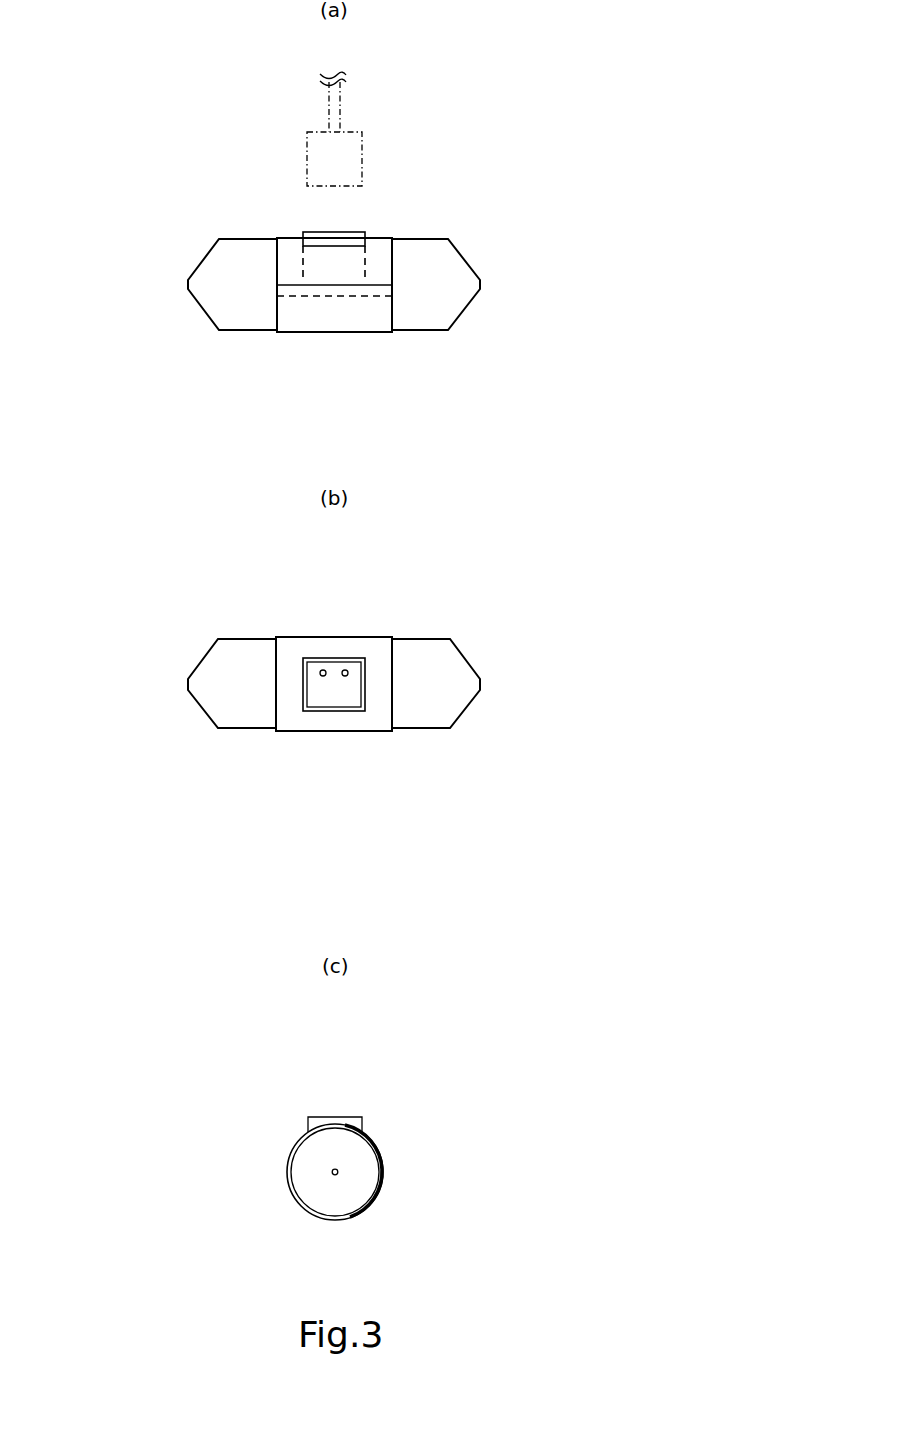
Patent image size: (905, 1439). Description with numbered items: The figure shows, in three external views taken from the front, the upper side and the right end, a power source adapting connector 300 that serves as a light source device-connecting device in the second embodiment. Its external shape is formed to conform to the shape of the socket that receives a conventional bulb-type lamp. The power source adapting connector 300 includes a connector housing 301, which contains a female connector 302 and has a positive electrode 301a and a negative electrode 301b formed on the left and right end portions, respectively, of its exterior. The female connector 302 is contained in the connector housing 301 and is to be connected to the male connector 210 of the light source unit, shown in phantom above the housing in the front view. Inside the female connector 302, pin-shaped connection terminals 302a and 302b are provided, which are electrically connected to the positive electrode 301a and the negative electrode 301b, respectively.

The power source adapting connector 300 is at (479, 183).
The connector housing 301 is at (381, 238).
The positive electrode 301a is at (200, 282).
The negative electrode 301b is at (459, 280).
The female connector 302 is at (312, 233).
The connection terminal 302a is at (323, 668).
The connection terminal 302b is at (345, 668).
The male connector 210 is at (360, 142).